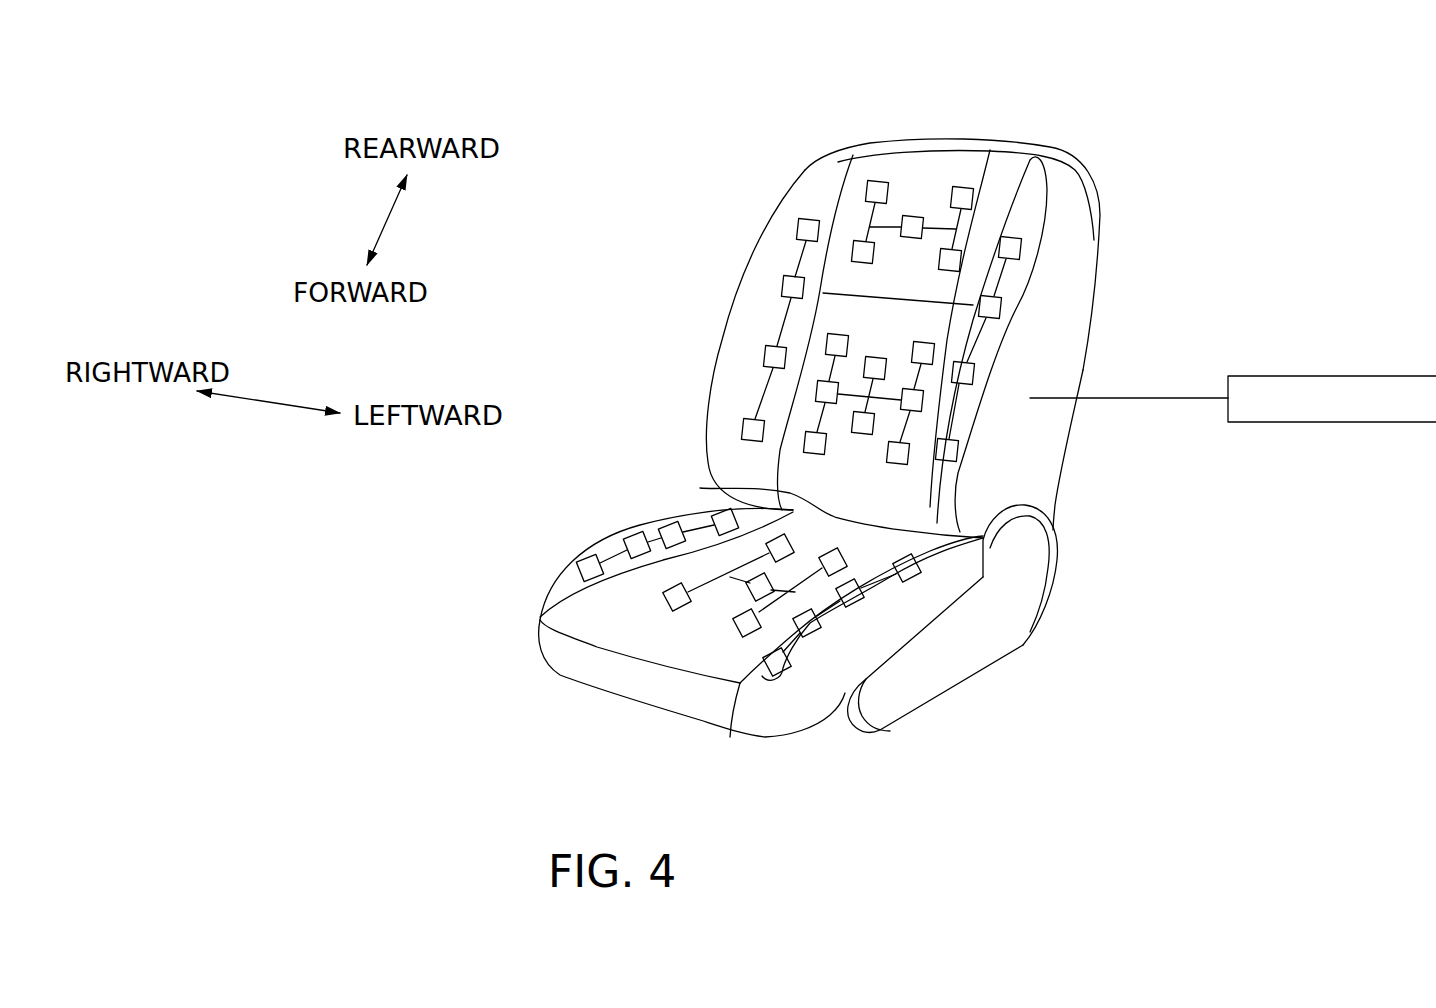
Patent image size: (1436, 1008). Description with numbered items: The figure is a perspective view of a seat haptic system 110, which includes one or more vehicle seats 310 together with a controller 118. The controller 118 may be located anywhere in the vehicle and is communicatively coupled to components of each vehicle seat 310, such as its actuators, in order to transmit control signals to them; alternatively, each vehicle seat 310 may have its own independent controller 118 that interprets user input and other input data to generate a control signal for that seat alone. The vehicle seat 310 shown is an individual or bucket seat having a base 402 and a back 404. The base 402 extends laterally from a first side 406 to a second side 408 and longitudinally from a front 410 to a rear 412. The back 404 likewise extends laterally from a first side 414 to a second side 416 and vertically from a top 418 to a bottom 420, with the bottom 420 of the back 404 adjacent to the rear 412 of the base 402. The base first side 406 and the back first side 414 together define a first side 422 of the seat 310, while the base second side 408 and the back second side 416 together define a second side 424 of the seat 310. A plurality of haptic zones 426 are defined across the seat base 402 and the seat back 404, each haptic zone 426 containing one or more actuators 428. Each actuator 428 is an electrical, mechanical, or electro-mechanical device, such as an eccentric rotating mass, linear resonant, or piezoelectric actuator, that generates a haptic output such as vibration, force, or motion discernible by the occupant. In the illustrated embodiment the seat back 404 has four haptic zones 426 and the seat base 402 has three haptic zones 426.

The seat haptic system 110 is at (688, 100).
The controller 118 is at (1332, 376).
The vehicle seat 310 is at (990, 163).
The base 402 is at (662, 648).
The back 404 is at (1082, 237).
The first side of the base 406 is at (838, 733).
The second side of the base 408 is at (580, 528).
The front of the base 410 is at (672, 733).
The rear of the base 412 is at (920, 527).
The first side of the back 414 is at (1066, 430).
The second side of the back 416 is at (770, 235).
The top of the back 418 is at (903, 136).
The bottom of the back 420 is at (790, 510).
The first side of the seat 422 is at (1070, 195).
The second side of the seat 424 is at (815, 152).
The haptic zones 426 is at (930, 158).
The actuators 428 is at (977, 152).